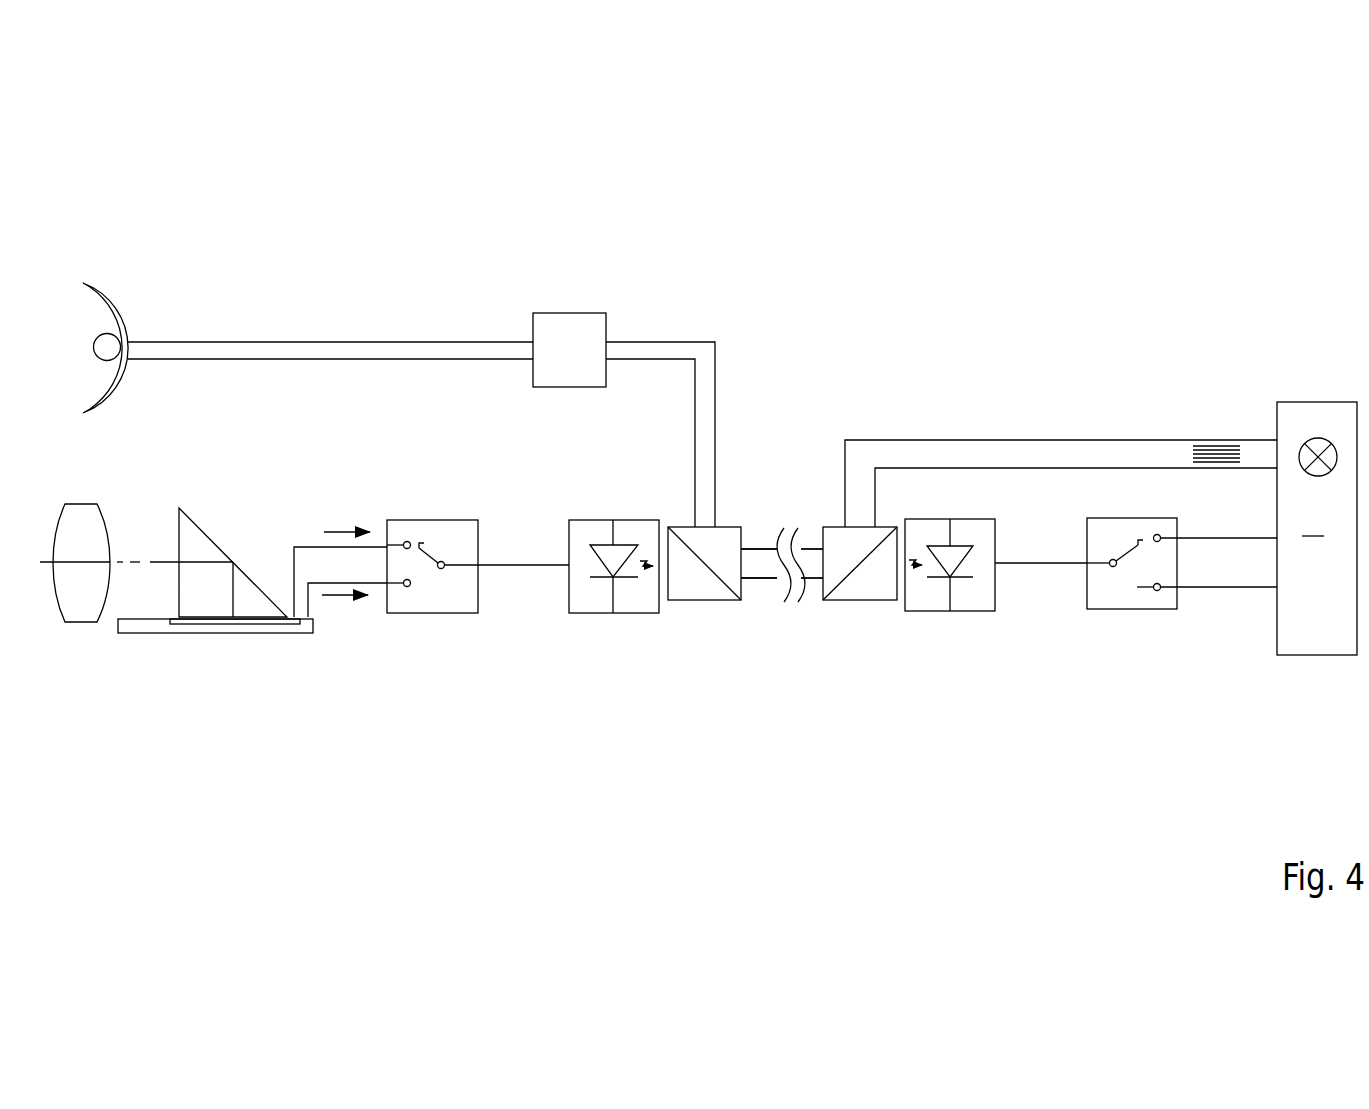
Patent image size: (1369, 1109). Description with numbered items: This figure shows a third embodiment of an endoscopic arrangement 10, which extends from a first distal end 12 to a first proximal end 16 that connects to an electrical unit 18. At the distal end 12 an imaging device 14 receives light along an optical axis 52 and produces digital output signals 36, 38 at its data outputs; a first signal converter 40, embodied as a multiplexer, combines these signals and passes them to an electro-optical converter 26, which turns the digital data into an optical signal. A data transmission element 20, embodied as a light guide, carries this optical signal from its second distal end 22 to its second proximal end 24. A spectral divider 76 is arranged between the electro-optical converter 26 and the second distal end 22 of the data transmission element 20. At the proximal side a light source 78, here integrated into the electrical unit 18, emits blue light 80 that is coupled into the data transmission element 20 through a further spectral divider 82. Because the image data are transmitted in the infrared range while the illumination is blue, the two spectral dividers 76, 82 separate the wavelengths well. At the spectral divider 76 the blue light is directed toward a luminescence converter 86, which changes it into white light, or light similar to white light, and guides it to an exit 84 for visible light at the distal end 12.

The endoscopic arrangement 10 is at (727, 236).
The first distal end 12 is at (383, 298).
The imaging device 14 is at (147, 635).
The first proximal end 16 is at (907, 326).
The electrical unit 18 is at (1317, 528).
The data transmission element 20 is at (787, 490).
The second distal end 22 is at (749, 545).
The second proximal end 24 is at (806, 545).
The electro-optical converter 26 is at (595, 520).
The digital output signal 36 is at (338, 523).
The digital output signal 38 is at (345, 597).
The first signal converter 40 is at (432, 520).
The optical axis 52 is at (133, 558).
The spectral divider 76 is at (706, 602).
The light source 78 is at (1315, 437).
The light 80 is at (1213, 445).
The further spectral divider 82 is at (860, 603).
The exit for visible light 84 is at (143, 316).
The luminescence converter 86 is at (560, 313).